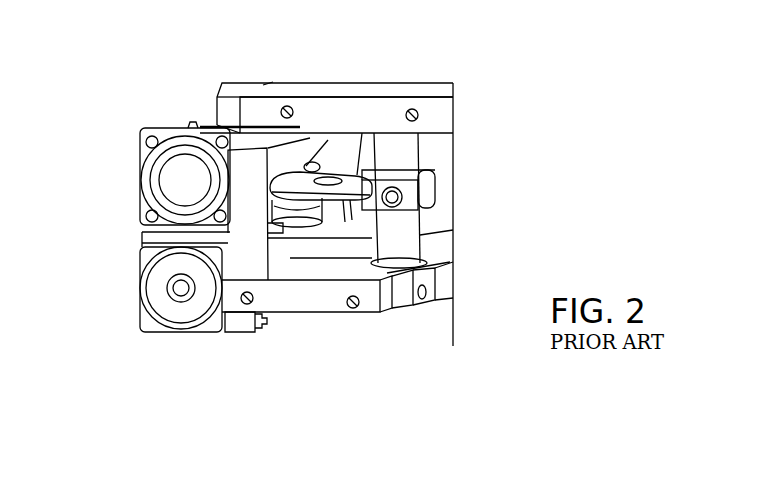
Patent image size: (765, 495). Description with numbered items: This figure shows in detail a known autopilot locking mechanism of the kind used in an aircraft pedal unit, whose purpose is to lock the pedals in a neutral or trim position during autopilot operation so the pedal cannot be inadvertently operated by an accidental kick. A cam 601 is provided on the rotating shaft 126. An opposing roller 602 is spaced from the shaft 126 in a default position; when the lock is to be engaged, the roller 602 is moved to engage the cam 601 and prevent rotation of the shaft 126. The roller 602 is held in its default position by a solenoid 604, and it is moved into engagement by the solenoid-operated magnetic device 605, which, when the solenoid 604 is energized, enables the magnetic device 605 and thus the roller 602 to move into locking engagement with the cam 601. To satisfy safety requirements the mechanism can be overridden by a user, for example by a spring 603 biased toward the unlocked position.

The rotating shaft 126 is at (405, 158).
The cam 601 is at (413, 188).
The roller 602 is at (312, 165).
The spring 603 is at (322, 250).
The solenoid 604 is at (182, 183).
The magnetic device 605 is at (172, 289).